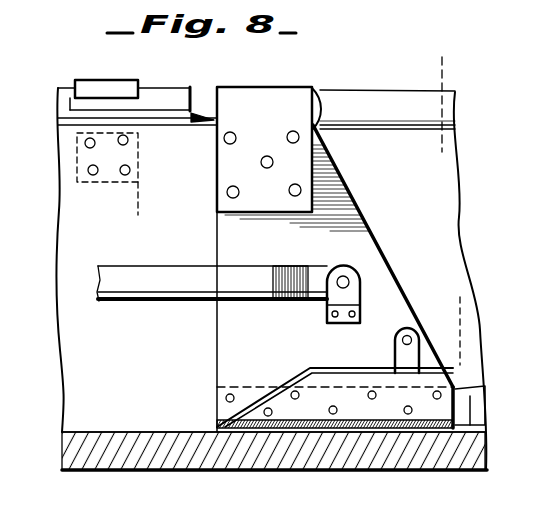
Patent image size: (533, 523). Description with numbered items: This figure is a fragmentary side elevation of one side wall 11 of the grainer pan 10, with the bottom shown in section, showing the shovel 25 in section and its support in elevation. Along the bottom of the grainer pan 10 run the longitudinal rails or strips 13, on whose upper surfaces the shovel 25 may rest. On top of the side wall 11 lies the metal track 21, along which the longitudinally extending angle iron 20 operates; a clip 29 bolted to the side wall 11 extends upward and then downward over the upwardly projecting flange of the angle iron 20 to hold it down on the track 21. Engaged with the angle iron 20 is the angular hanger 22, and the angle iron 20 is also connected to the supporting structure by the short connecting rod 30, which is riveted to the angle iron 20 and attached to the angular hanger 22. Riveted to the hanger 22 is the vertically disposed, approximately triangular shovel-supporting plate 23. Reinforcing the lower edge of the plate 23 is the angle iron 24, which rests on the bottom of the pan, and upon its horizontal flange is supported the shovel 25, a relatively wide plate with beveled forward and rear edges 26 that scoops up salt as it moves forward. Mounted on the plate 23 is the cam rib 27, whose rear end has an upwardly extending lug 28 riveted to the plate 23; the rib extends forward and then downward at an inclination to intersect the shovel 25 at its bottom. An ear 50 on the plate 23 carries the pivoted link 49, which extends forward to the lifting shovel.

The grainer pan 10 is at (433, 61).
The side wall 11 is at (135, 61).
The rails or strips 13 is at (147, 431).
The angle iron 20 is at (182, 88).
The metal track 21 is at (377, 124).
The angular hanger 22 is at (217, 176).
The shovel-supporting plate 23 is at (387, 281).
The angle iron 24 is at (477, 390).
The shovel 25 is at (315, 427).
The beveled forward and rear edges 26 is at (465, 413).
The cam rib 27 is at (310, 368).
The upwardly extending lug 28 is at (407, 328).
The clip 29 is at (237, 0).
The short connecting rod 30 is at (214, 100).
The pivoted link 49 is at (166, 280).
The ear 50 is at (345, 266).